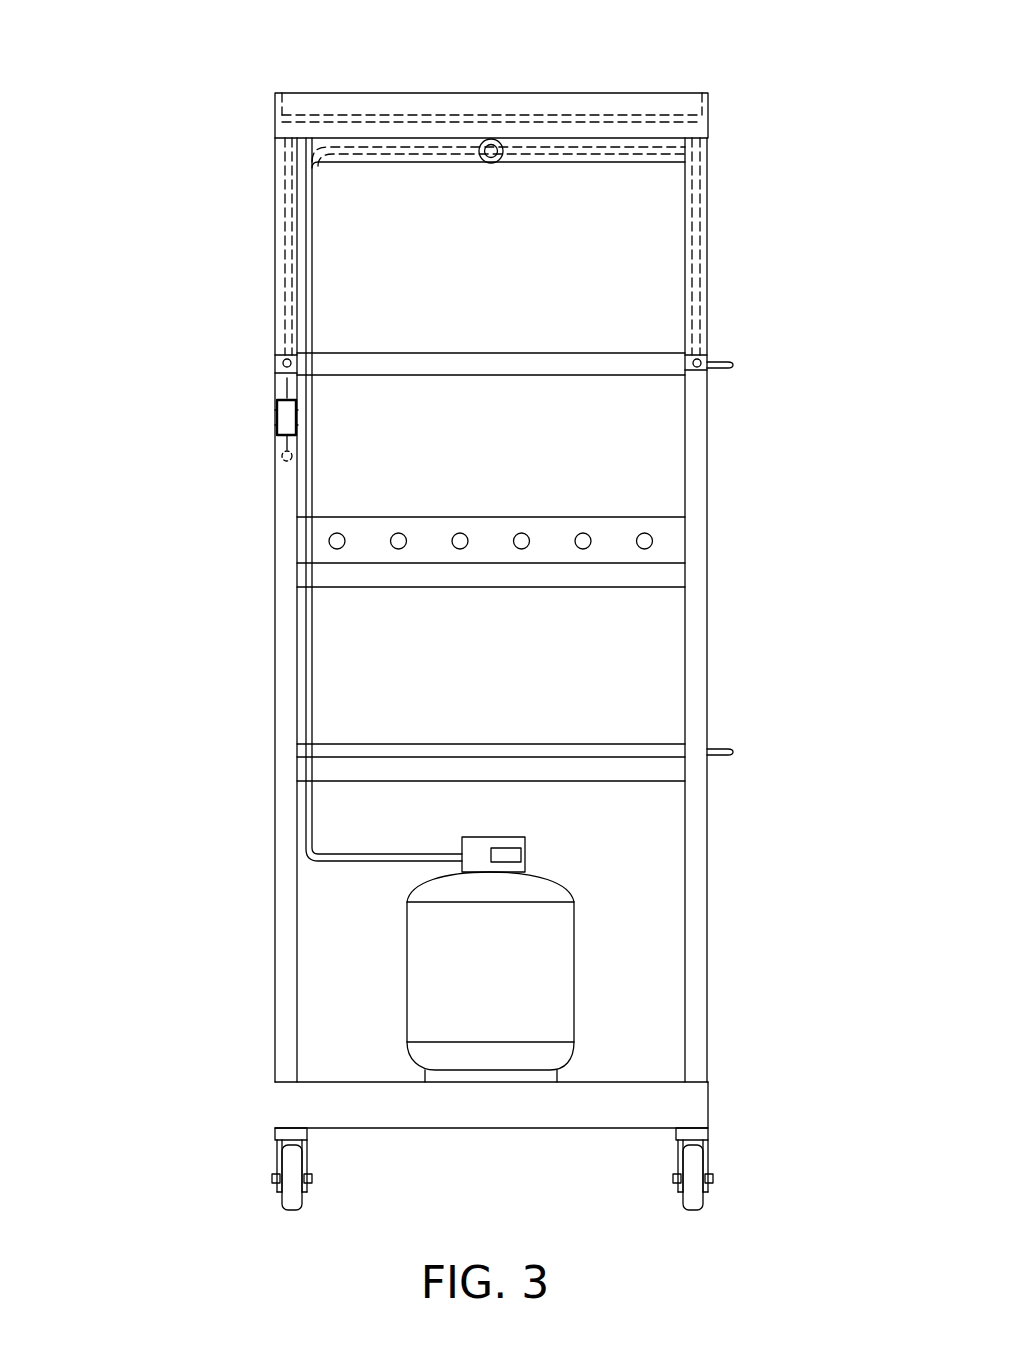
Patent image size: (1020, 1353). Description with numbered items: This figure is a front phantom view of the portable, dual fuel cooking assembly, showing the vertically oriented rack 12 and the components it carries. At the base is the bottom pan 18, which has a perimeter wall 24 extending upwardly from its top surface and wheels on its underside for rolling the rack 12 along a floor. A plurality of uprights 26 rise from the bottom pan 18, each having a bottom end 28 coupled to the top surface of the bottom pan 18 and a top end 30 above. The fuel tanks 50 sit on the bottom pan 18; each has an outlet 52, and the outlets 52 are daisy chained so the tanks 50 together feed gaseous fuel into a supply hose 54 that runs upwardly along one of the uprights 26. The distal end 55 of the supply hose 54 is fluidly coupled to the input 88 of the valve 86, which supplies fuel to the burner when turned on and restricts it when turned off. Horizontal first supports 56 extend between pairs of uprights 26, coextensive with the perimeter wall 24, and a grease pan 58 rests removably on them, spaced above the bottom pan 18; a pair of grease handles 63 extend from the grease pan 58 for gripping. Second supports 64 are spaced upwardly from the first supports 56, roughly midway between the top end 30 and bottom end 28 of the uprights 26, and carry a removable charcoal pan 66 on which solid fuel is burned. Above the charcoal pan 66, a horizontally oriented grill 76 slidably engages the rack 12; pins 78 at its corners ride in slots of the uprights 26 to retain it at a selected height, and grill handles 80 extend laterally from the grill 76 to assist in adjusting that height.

The rack 12 is at (180, 441).
The bottom pan 18 is at (322, 1081).
The perimeter wall 24 is at (275, 1100).
The uprights 26 is at (275, 628).
The bottom end 28 is at (703, 1124).
The top end 30 is at (282, 130).
The fuel tanks 50 is at (574, 985).
The outlet 52 is at (460, 843).
The supply hose 54 is at (300, 792).
The distal end 55 is at (492, 139).
The first supports 56 is at (627, 781).
The grease pan 58 is at (333, 742).
The grease handles 63 is at (735, 750).
The second supports 64 is at (300, 600).
The charcoal pan 66 is at (687, 535).
The grill 76 is at (597, 353).
The pins 78 is at (702, 112).
The grill handles 80 is at (737, 365).
The valve 86 is at (497, 160).
The input 88 is at (486, 160).